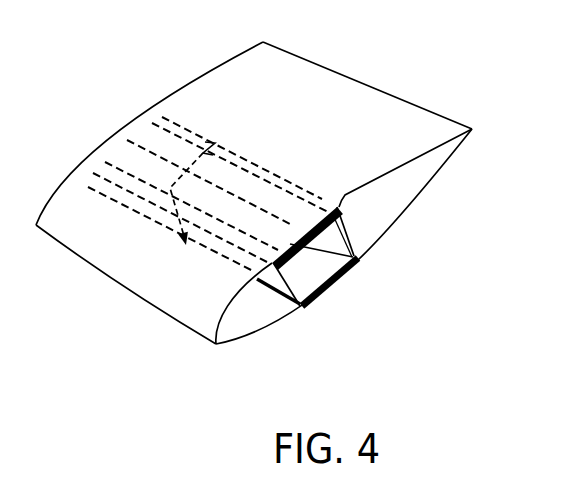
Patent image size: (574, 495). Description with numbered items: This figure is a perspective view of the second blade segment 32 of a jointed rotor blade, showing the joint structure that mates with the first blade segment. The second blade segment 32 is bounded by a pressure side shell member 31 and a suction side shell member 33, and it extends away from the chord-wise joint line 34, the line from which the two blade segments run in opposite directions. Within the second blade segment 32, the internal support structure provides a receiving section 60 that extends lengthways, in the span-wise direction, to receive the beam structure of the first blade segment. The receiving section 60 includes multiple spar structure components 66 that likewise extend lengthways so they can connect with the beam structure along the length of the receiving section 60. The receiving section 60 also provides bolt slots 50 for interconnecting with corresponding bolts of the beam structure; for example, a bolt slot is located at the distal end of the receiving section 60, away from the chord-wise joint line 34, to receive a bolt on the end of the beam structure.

The pressure side shell member 31 is at (387, 115).
The second blade segment 32 is at (325, 68).
The suction side shell member 33 is at (411, 209).
The chord-wise joint line 34 is at (237, 318).
The bolt slots 50 is at (293, 201).
The receiving section 60 is at (303, 262).
The spar structure components 66 is at (234, 186).